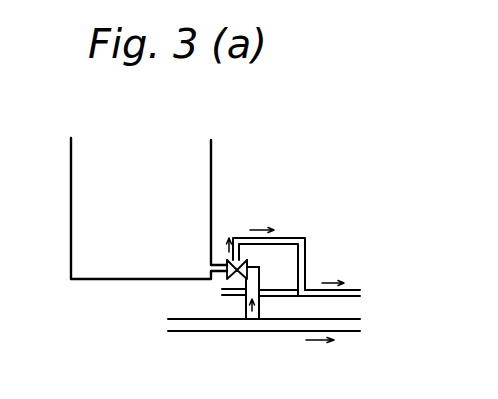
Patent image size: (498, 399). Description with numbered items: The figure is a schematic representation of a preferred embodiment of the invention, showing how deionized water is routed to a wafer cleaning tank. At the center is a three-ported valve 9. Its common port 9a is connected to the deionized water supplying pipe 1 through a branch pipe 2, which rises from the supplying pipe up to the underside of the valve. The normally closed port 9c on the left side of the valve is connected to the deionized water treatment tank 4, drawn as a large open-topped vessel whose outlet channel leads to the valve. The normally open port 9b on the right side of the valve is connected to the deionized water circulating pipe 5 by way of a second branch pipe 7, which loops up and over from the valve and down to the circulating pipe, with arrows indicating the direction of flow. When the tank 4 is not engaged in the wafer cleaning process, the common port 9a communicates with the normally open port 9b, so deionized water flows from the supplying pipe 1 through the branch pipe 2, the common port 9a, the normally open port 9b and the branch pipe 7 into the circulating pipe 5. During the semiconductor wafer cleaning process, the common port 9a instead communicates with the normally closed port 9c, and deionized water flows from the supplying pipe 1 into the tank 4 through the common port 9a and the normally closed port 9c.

The deionized water supplying pipe 1 is at (243, 332).
The branch pipe 2 is at (263, 304).
The deionized water treatment tank 4 is at (212, 148).
The deionized water circulating pipe 5 is at (358, 290).
The branch pipe 7 is at (301, 237).
The three-ported valve 9 is at (227, 278).
The common port 9a is at (246, 273).
The normally open port 9b is at (246, 261).
The normally closed port 9c is at (229, 262).